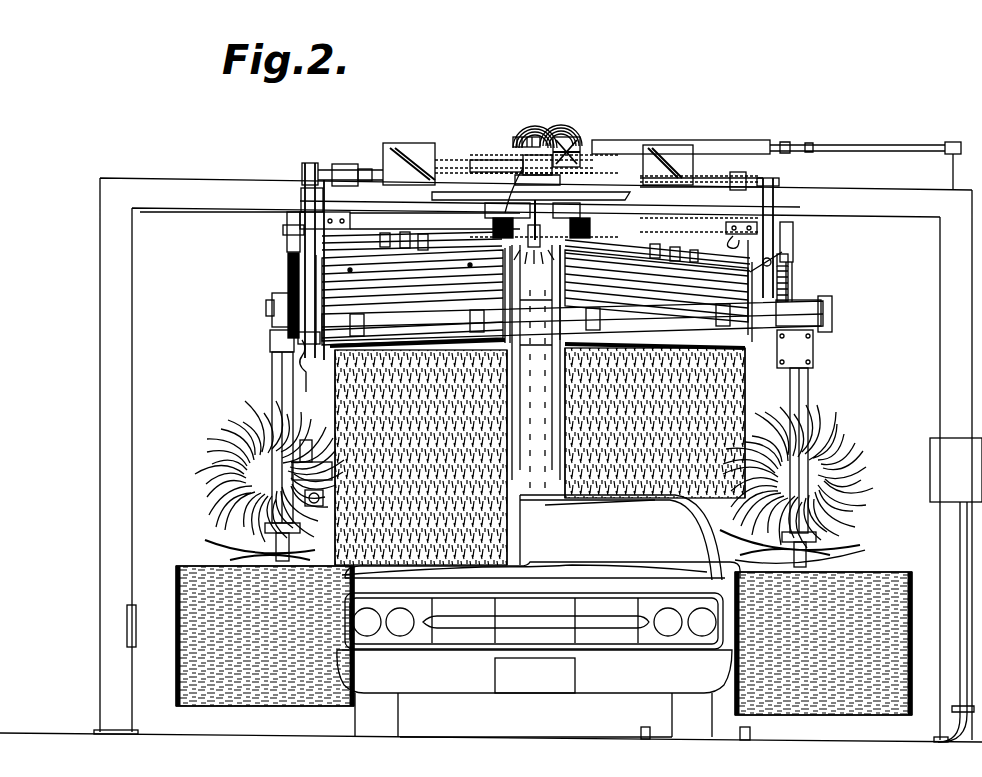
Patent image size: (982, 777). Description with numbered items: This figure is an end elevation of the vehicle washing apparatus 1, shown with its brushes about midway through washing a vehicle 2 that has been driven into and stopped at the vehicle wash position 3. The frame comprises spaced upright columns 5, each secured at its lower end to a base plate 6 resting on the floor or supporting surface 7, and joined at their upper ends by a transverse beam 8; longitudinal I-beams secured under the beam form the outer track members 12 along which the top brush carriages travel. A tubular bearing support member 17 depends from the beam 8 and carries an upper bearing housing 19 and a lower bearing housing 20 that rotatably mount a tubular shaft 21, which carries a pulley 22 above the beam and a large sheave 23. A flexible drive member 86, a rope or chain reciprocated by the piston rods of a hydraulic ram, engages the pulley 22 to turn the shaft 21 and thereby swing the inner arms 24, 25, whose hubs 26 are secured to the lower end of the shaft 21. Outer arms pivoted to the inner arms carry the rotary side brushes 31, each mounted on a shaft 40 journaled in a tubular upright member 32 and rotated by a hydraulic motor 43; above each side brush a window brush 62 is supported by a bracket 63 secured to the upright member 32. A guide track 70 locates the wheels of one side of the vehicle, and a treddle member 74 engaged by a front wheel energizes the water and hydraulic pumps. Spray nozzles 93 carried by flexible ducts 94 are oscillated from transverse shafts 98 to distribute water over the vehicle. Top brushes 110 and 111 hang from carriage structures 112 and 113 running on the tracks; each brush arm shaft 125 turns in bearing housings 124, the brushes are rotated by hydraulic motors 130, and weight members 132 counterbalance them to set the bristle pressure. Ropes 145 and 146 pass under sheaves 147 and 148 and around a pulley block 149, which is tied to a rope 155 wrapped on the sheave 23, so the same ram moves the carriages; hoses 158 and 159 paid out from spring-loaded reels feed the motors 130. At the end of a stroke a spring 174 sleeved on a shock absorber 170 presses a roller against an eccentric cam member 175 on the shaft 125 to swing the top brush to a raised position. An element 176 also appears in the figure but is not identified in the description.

The vehicle washing apparatus 1 is at (782, 133).
The vehicle 2 is at (613, 692).
The vehicle wash position 3 is at (480, 746).
The upright columns 5 is at (940, 290).
The base plate 6 is at (86, 733).
The floor or supporting surface 7 is at (185, 736).
The transverse beam 8 is at (872, 200).
The outer track members 12 is at (792, 223).
The tubular bearing support member 17 is at (588, 242).
The upper bearing housing 19 is at (503, 210).
The lower bearing housing 20 is at (545, 245).
The tubular shaft 21 is at (519, 166).
The pulley 22 is at (534, 145).
The large wheel or sheave 23 is at (471, 166).
The inner arm 24 is at (824, 312).
The inner arm 25 is at (406, 317).
The hubs 26 is at (522, 345).
The rotary side brushes 31 is at (900, 630).
The tubular upright member 32 is at (805, 405).
The shaft 40 is at (830, 548).
The hydraulic motor 43 is at (270, 312).
The window brushes 62 is at (860, 464).
The bracket 63 is at (240, 515).
The guide track 70 is at (639, 740).
The treddle member 74 is at (721, 744).
The flexible drive member 86 is at (513, 156).
The nozzles 93 is at (728, 240).
The flexible ducts 94 is at (541, 210).
The transverse shafts 98 is at (432, 199).
The top brush 110 is at (468, 568).
The top brush 111 is at (640, 500).
The carriage structure 112 is at (285, 250).
The carriage structure 113 is at (782, 255).
The bearing housings 124 is at (302, 366).
The shaft 125 is at (390, 323).
The motors 130 is at (292, 476).
The weight members 132 is at (287, 280).
The rope 145 is at (323, 174).
The rope 146 is at (761, 205).
The pulley or sheave 147 is at (302, 207).
The pulley or sheave 148 is at (772, 195).
The pulley block 149 is at (318, 158).
The rope 155 is at (380, 158).
The hose 158 is at (406, 236).
The hose 159 is at (432, 231).
The shock absorber 170 is at (787, 266).
The spring 174 is at (789, 285).
The eccentric cam member 175 is at (272, 378).
The limit switch 176 is at (148, 621).